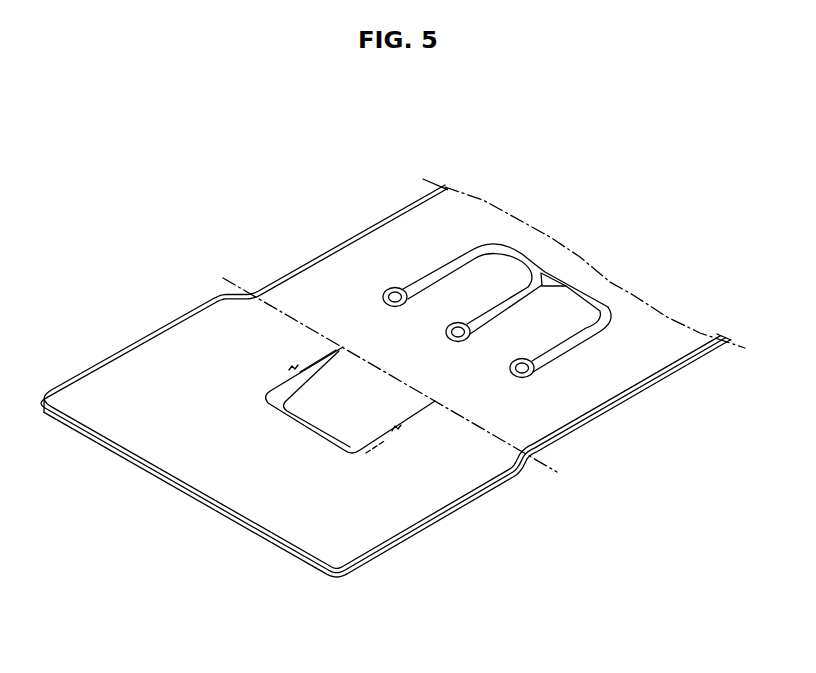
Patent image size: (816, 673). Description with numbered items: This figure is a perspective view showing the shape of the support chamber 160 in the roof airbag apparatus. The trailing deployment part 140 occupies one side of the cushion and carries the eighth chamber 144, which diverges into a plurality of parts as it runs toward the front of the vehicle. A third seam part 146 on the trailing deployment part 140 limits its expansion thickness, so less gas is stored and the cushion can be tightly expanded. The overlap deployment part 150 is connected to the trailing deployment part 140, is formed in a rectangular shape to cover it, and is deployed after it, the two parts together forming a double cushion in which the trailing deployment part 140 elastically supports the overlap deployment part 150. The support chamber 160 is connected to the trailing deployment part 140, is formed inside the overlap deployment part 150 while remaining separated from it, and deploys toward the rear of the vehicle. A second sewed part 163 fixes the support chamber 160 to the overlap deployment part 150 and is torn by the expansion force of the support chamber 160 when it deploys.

The trailing deployment part 140 is at (366, 196).
The eighth chamber 144 is at (493, 277).
The third seam part 146 is at (568, 277).
The overlap deployment part 150 is at (230, 489).
The support chamber 160 is at (375, 412).
The second sewed part 163 is at (295, 366).